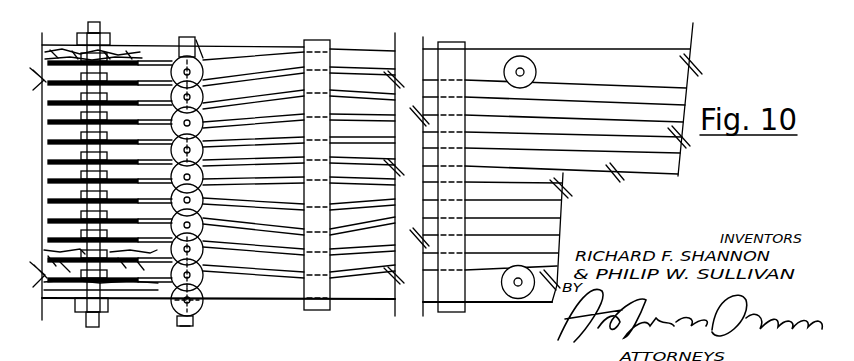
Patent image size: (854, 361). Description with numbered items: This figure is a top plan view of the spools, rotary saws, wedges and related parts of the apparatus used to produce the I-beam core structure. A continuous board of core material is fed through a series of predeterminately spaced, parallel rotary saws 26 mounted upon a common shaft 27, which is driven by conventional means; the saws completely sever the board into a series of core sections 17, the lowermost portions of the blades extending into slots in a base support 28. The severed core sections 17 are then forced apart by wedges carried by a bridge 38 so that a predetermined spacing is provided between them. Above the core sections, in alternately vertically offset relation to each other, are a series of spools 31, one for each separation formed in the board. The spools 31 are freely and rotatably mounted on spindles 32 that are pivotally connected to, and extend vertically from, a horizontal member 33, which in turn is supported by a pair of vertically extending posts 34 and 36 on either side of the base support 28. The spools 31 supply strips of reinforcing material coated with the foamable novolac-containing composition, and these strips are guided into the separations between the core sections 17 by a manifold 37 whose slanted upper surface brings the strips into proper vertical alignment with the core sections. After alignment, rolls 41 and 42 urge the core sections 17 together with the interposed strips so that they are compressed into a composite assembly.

The core sections 17 is at (267, 269).
The rotary saws 26 is at (58, 242).
The common shaft 27 is at (90, 23).
The base support 28 is at (148, 44).
The spools 31 is at (172, 281).
The spindles 32 is at (191, 96).
The horizontal member 33 is at (197, 48).
The post 34 is at (194, 315).
The post 36 is at (177, 36).
The manifold 37 is at (452, 42).
The bridge 38 is at (320, 40).
The roll 41 is at (531, 56).
The roll 42 is at (508, 298).